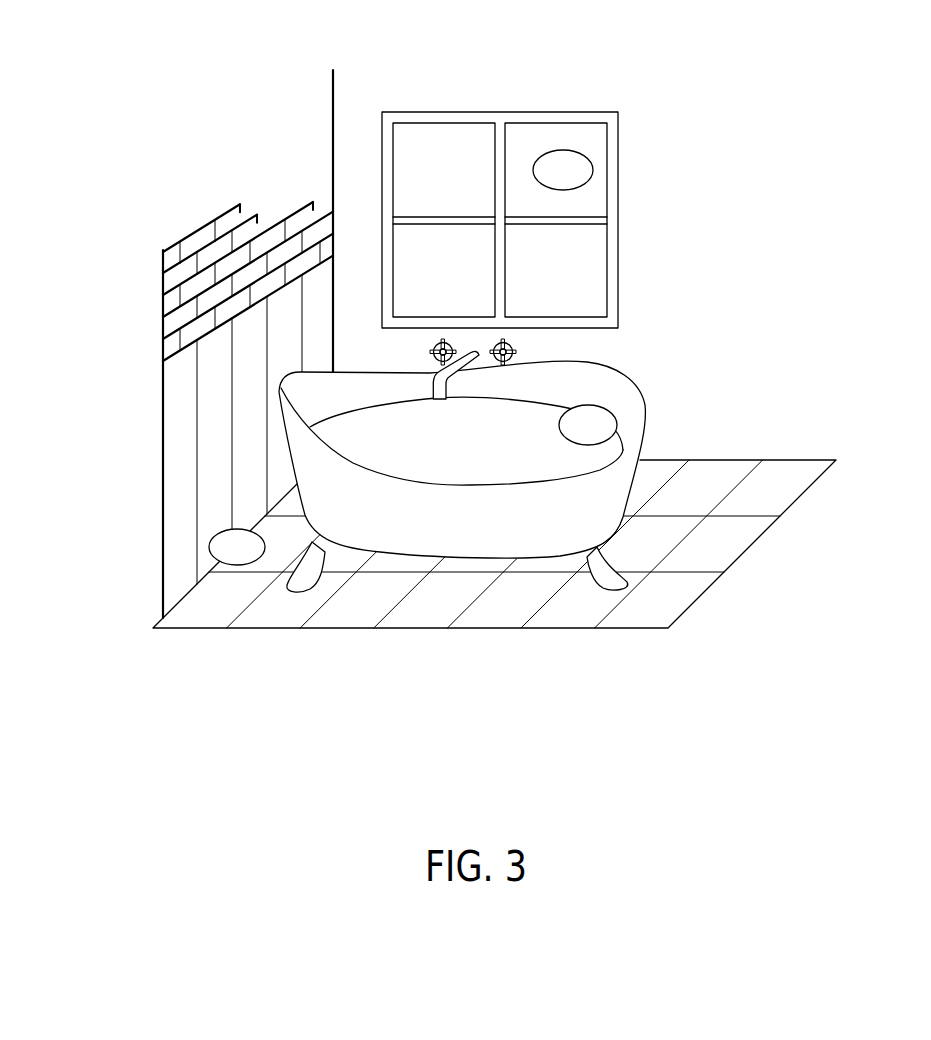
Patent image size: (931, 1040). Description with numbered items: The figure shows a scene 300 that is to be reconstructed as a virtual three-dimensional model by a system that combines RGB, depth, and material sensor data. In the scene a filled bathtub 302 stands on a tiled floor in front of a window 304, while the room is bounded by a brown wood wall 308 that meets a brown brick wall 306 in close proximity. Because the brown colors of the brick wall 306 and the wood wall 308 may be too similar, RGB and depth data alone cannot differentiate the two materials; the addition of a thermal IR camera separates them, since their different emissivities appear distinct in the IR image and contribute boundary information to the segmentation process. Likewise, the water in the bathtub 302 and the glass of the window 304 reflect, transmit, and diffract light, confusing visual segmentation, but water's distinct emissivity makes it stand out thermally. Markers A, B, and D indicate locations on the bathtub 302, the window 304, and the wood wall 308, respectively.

The scene 300 is at (575, 696).
The filled bathtub 302 is at (637, 378).
The window 304 is at (562, 112).
The brick wall 306 is at (297, 207).
The wood wall 308 is at (162, 588).
The sensor location A is at (588, 425).
The sensor location B is at (563, 170).
The sensor location D is at (237, 547).